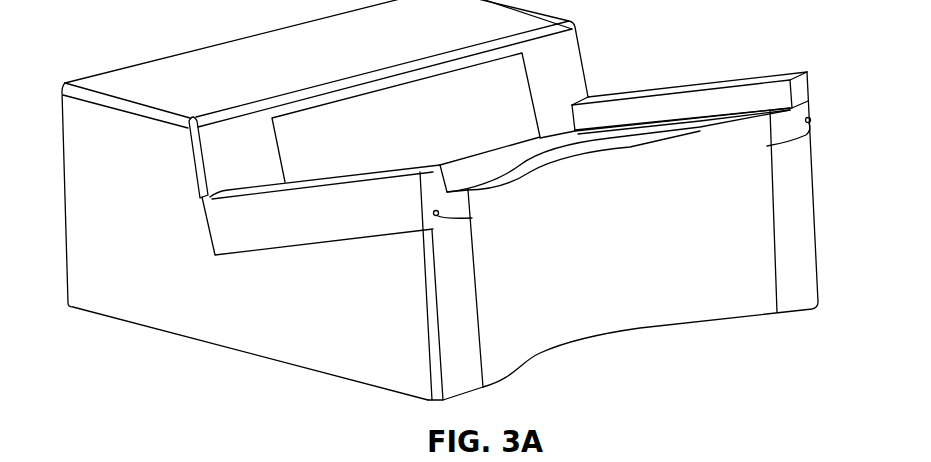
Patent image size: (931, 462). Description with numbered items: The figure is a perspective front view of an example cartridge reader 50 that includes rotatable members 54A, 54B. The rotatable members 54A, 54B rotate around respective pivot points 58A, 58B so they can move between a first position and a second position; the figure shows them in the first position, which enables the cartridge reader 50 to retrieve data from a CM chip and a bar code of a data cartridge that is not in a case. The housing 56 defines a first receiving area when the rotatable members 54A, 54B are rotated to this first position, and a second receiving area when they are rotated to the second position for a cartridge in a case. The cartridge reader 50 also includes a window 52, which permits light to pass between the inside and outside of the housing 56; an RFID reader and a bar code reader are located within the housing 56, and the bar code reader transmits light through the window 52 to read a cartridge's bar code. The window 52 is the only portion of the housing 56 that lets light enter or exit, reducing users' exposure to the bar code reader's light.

The cartridge reader 50 is at (743, 48).
The window 52 is at (450, 107).
The rotatable member 54A is at (310, 180).
The rotatable member 54B is at (663, 88).
The housing 56 is at (663, 208).
The pivot point 58A is at (472, 218).
The pivot point 58B is at (773, 148).